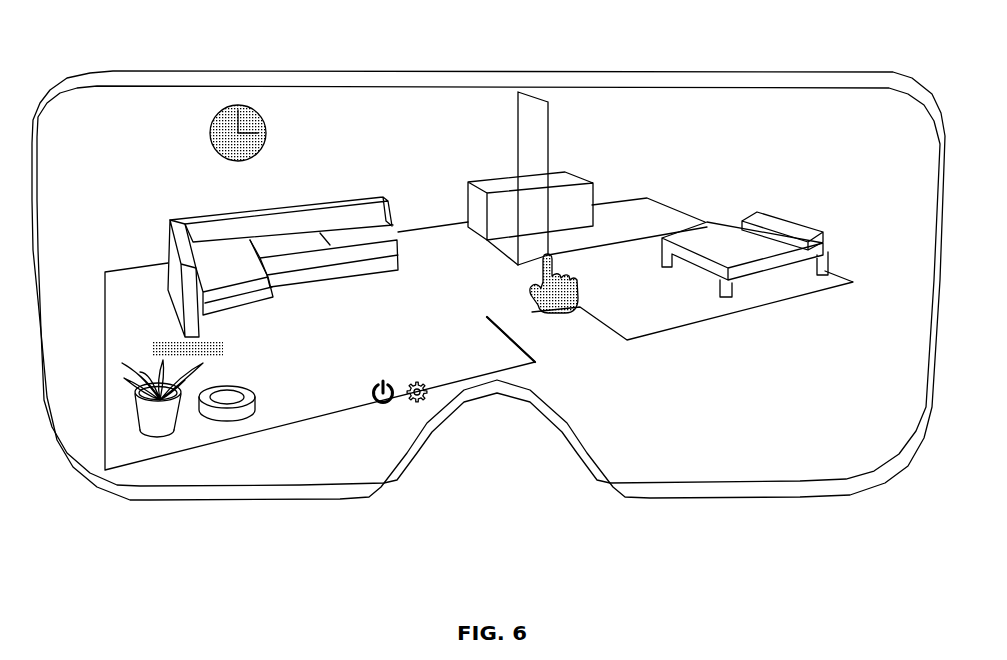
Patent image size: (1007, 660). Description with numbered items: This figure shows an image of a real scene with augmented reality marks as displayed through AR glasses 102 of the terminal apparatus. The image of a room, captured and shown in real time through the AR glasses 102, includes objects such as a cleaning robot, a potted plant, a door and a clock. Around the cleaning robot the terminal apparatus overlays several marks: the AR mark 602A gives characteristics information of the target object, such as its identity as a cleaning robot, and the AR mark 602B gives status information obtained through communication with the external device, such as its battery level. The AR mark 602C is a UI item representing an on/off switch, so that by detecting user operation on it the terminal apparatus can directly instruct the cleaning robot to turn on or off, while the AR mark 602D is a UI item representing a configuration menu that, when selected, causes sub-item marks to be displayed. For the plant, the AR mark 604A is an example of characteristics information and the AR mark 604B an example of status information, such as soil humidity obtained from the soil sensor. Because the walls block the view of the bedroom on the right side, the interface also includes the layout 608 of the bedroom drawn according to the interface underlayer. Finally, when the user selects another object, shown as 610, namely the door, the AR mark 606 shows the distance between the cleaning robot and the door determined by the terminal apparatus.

The AR glasses 102 is at (862, 68).
The AR mark 602A is at (335, 377).
The AR mark 602B is at (302, 402).
The AR mark 602C is at (392, 408).
The AR mark 602D is at (430, 397).
The AR mark 604A is at (113, 312).
The AR mark 604B is at (90, 358).
The AR mark 606 is at (625, 108).
The layout 608 is at (803, 235).
The other object selected by user 610 is at (578, 308).